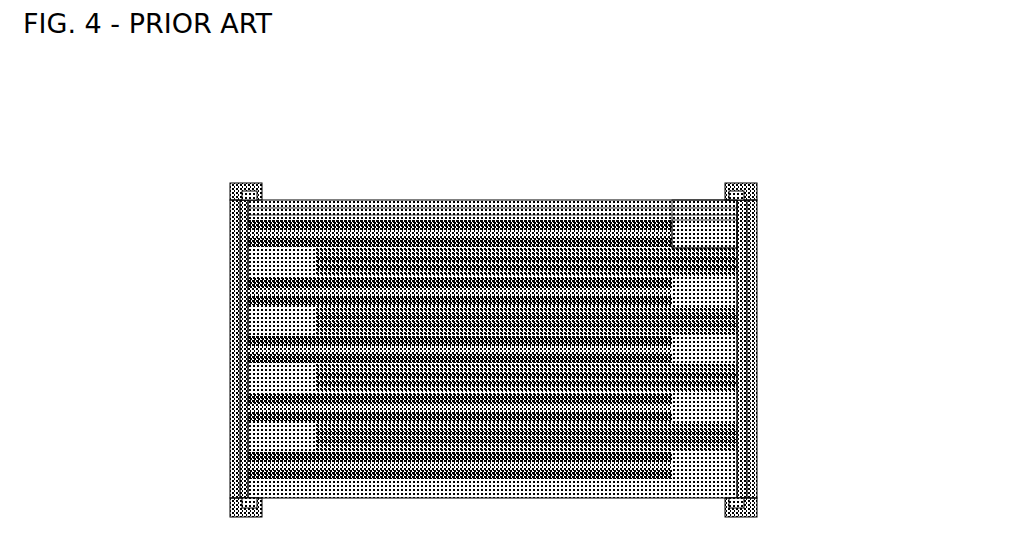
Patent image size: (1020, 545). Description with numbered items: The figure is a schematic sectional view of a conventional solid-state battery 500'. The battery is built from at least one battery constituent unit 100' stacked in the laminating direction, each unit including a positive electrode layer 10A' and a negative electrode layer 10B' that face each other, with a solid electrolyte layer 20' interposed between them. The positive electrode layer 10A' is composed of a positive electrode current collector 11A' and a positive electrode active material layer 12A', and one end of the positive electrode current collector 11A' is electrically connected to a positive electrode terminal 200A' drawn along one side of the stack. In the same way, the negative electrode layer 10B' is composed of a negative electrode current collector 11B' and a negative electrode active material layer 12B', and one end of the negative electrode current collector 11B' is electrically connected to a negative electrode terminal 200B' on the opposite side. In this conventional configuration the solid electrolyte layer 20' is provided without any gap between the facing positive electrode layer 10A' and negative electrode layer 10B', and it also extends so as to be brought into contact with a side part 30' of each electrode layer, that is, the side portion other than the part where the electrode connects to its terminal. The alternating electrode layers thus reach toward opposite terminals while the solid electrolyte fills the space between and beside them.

The solid-state battery 500' is at (540, 292).
The battery constituent unit 100' is at (492, 210).
The side part 30' is at (693, 195).
The solid electrolyte layer 20' is at (753, 212).
The positive electrode layer 10A' is at (618, 342).
The positive electrode current collector 11A' is at (579, 350).
The positive electrode active material layer 12A' is at (578, 348).
The negative electrode layer 10B' is at (372, 349).
The negative electrode current collector 11B' is at (410, 349).
The negative electrode active material layer 12B' is at (410, 350).
The positive electrode terminal 200A' is at (798, 350).
The negative electrode terminal 200B' is at (187, 350).